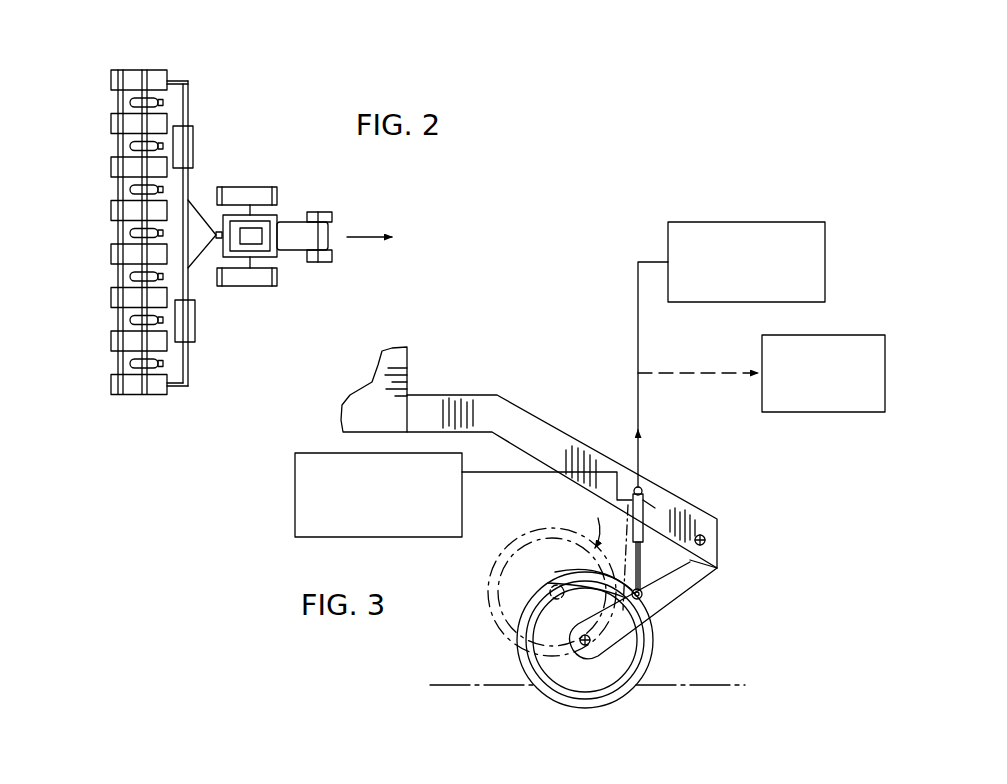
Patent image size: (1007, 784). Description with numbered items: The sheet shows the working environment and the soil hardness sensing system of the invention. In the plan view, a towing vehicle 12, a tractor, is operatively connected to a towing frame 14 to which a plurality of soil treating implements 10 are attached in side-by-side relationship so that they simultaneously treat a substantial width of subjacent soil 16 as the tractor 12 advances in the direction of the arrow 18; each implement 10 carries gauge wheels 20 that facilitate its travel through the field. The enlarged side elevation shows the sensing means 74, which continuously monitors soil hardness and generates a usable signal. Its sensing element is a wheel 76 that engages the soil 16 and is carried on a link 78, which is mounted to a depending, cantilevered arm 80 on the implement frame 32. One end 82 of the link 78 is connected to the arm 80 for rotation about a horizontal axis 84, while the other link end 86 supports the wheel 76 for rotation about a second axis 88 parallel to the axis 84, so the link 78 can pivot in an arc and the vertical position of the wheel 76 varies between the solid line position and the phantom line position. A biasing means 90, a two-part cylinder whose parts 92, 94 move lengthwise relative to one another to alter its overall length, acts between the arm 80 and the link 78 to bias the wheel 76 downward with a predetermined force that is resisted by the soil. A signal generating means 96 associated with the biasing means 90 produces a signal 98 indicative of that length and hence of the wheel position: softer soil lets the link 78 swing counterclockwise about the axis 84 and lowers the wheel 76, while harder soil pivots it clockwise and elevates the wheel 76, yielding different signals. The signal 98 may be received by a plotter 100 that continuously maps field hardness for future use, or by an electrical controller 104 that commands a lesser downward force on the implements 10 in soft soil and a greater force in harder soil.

In FIG. 2, the soil treating implement 10 is at (108, 83).
In FIG. 3, the soil treating implement 10 is at (358, 419).
In FIG. 2, the towing vehicle 12 is at (288, 222).
In FIG. 2, the towing frame 14 is at (187, 180).
In FIG. 2, the subjacent soil 16 is at (304, 313).
In FIG. 3, the subjacent soil 16 is at (462, 721).
In FIG. 2, the arrow 18 is at (360, 237).
In FIG. 2, the gauge wheels 20 is at (159, 98).
In FIG. 3, the implement frame 32 is at (407, 373).
In FIG. 3, the sensing means 74 is at (664, 622).
In FIG. 3, the wheel 76 is at (617, 690).
In FIG. 3, the link 78 is at (680, 578).
In FIG. 3, the cantilevered arm 80 is at (572, 430).
In FIG. 3, the link end 82 is at (678, 556).
In FIG. 3, the horizontal axis 84 is at (704, 536).
In FIG. 3, the link end 86 is at (590, 645).
In FIG. 3, the second axis 88 is at (585, 645).
In FIG. 3, the biasing means 90 is at (652, 500).
In FIG. 3, the cylinder part 92 is at (650, 530).
In FIG. 3, the cylinder part 94 is at (567, 577).
In FIG. 3, the signal generating means 96 is at (440, 533).
In FIG. 3, the signal 98 is at (632, 437).
In FIG. 3, the plotter 100 is at (835, 399).
In FIG. 3, the electrical controller 104 is at (752, 290).